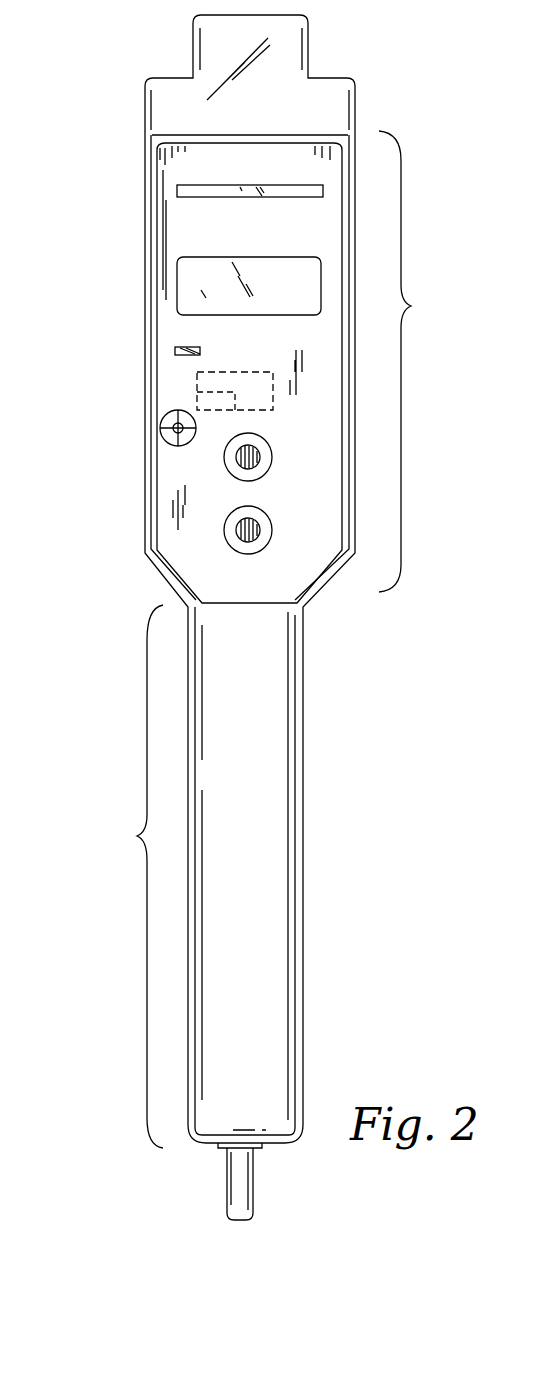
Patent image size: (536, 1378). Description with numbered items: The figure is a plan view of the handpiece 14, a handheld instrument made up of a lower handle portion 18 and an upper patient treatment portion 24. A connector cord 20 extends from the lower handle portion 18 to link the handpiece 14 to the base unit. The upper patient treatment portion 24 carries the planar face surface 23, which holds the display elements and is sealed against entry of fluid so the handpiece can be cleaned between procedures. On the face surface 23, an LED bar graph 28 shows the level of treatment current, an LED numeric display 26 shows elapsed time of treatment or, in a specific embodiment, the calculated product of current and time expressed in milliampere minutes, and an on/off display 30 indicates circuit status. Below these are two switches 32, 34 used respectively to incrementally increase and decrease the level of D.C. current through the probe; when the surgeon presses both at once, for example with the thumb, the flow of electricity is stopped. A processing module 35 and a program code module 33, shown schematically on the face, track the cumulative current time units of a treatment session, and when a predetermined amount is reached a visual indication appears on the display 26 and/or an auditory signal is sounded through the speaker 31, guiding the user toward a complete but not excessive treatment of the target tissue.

The handpiece 14 is at (116, 590).
The lower handle portion 18 is at (135, 876).
The connector cord 20 is at (245, 1199).
The planar face surface 23 is at (320, 354).
The upper patient treatment portion 24 is at (413, 361).
The LED numeric display 26 is at (181, 292).
The LED bar graph 28 is at (186, 198).
The on/off display 30 is at (186, 357).
The speaker 31 is at (160, 446).
The switch 32 is at (272, 451).
The program code module 33 is at (203, 398).
The switch 34 is at (271, 521).
The processing module 35 is at (253, 392).